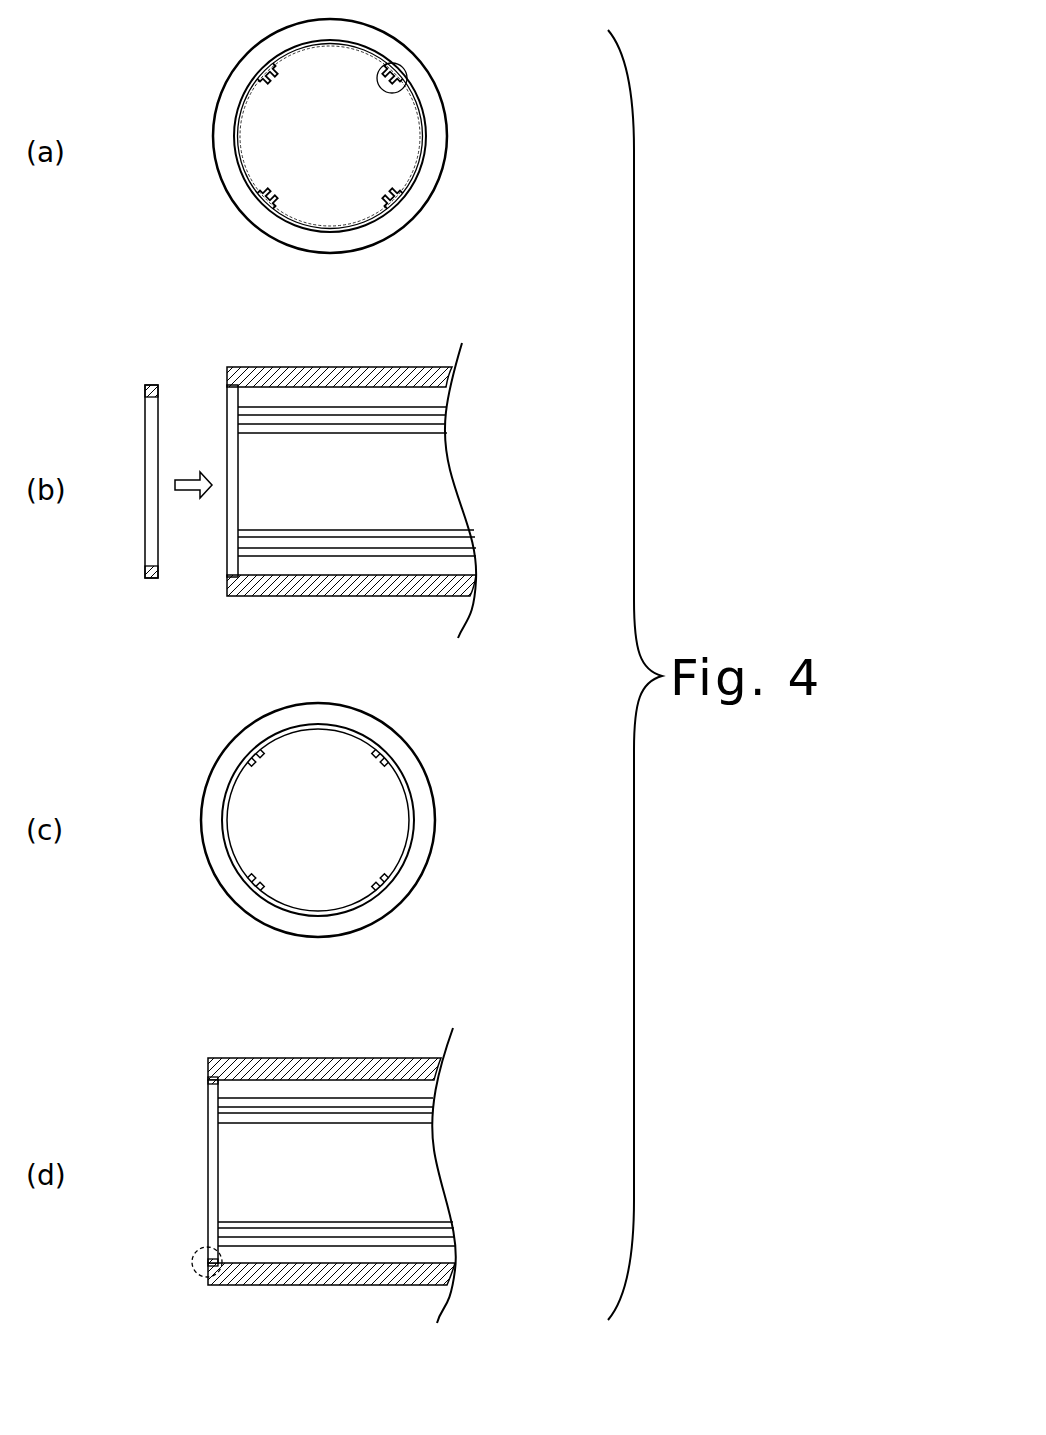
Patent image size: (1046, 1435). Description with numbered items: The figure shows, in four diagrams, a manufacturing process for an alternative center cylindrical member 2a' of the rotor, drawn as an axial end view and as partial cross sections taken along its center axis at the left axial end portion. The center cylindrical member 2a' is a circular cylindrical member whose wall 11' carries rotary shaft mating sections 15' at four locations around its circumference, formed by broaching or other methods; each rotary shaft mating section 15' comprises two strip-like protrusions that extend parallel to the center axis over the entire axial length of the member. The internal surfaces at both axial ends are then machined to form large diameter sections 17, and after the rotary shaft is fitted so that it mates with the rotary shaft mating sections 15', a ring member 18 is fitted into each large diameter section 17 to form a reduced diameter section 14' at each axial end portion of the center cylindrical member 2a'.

The center cylindrical member 2a' is at (377, 671).
The peripheral wall of tube 11' is at (342, 856).
The reduced diameter section 14' is at (164, 1261).
The rotary shaft mating section 15' is at (344, 630).
The large diameter section 17 is at (244, 138).
The ring member 18 is at (151, 383).